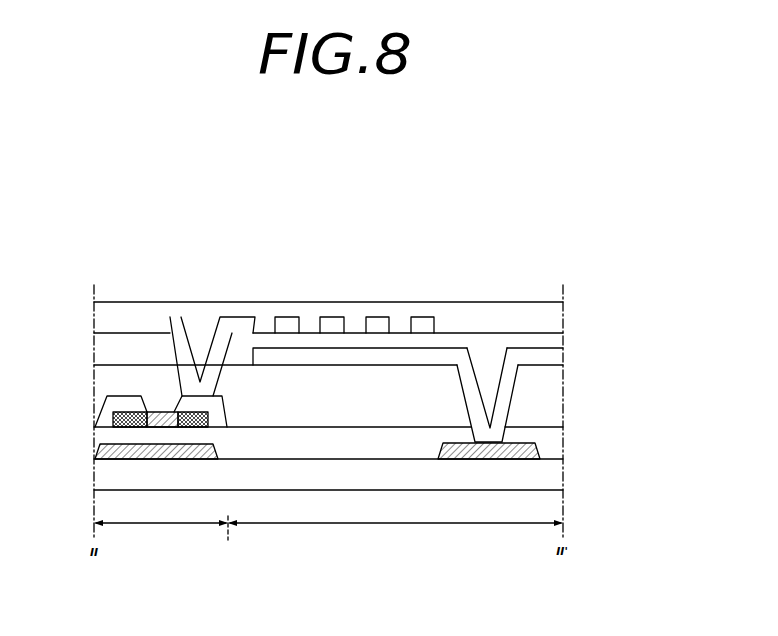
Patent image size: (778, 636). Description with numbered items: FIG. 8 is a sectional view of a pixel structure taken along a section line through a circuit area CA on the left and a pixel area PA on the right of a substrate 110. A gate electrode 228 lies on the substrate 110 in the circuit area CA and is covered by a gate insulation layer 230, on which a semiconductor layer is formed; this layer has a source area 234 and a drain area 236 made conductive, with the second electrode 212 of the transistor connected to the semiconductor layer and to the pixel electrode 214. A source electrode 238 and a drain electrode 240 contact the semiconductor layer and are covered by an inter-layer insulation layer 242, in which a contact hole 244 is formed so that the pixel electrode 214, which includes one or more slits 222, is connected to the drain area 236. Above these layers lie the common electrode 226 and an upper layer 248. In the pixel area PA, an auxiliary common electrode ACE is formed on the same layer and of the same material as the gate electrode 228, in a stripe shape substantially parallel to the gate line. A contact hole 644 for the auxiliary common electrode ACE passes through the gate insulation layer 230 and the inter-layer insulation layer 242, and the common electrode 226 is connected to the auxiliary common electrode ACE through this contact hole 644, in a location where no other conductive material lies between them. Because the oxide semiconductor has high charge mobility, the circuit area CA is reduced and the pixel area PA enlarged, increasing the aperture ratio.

The substrate 110 is at (555, 487).
The second electrode 212 is at (165, 412).
The pixel electrode 214 is at (333, 317).
The slits 222 is at (343, 333).
The common electrode 226 is at (555, 353).
The gate electrode 228 is at (99, 446).
The gate insulation layer 230 is at (555, 435).
The source area 234 is at (128, 410).
The drain area 236 is at (195, 412).
The source electrode 238 is at (105, 399).
The drain electrode 240 is at (227, 412).
The inter-layer insulation layer 242 is at (555, 375).
The contact hole 244 is at (232, 348).
The upper layer 248 is at (555, 313).
The contact hole for the auxiliary common electrode 644 is at (514, 390).
The auxiliary common electrode ACE is at (537, 445).
The circuit area CA is at (161, 531).
The pixel area PA is at (395, 533).